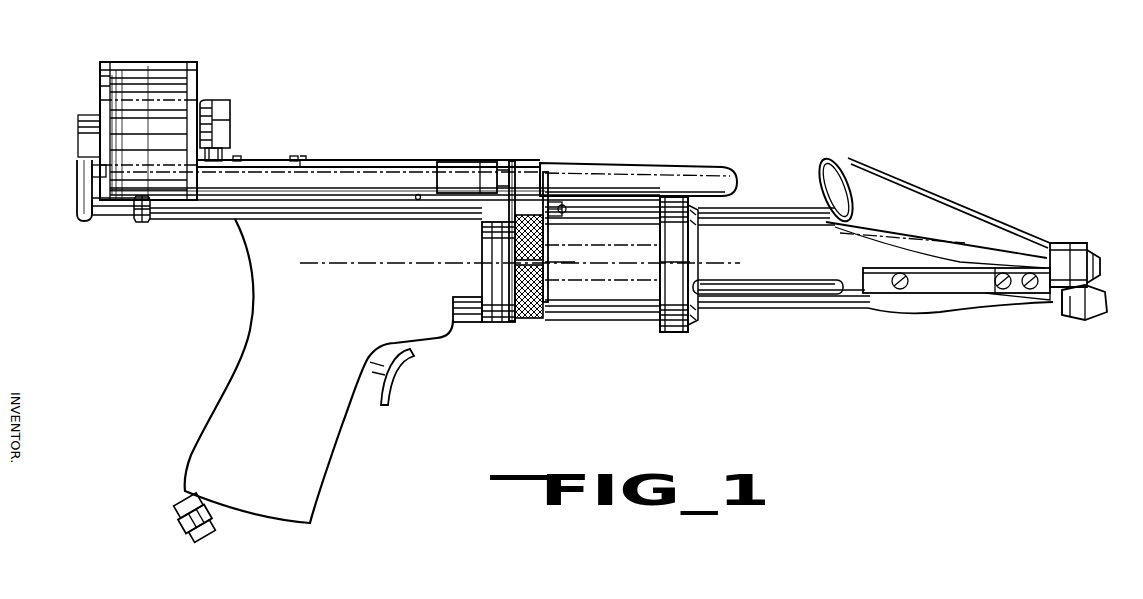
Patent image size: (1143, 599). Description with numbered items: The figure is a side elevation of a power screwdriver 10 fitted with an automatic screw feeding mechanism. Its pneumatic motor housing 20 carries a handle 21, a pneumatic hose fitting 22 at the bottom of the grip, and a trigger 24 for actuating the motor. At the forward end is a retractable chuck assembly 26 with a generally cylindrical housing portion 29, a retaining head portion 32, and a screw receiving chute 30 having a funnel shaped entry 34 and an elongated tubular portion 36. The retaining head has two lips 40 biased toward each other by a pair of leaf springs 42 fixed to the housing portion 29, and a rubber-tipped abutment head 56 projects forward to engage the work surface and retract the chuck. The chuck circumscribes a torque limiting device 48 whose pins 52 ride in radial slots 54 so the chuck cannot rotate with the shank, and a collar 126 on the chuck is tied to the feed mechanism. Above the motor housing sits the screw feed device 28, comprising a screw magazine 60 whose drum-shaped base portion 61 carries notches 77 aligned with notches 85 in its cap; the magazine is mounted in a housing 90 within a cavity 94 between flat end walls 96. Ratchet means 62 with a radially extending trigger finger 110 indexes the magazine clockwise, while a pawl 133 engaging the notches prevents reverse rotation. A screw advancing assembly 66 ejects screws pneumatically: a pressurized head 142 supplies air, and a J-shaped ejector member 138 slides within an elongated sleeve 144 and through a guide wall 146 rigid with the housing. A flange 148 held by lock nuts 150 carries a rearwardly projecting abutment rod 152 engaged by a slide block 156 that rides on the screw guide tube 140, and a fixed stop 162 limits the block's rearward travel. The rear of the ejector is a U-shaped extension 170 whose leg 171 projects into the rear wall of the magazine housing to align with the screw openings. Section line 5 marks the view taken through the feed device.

The section line 5- 5 is at (85, 170).
The dispensing gun 10 is at (617, 251).
The pneumatic motor housing 20 is at (262, 303).
The handle 21 is at (237, 378).
The pneumatic hose fitting 22 is at (178, 508).
The trigger 24 is at (393, 384).
The retractable chuck assembly 26 is at (1090, 214).
The screw feed device 28 is at (366, 160).
The cylindrical housing portion 29 is at (820, 318).
The screw receiving chute 30 is at (896, 192).
The retaining head portion 32 is at (1074, 240).
The funnel shaped entry 34 is at (838, 160).
The elongated tubular portion 36 is at (936, 205).
The lips 40 is at (1092, 260).
The leaf springs 42 is at (921, 293).
The torque limiting device 48 is at (612, 305).
The pins 52 is at (702, 288).
The radial slots 54 is at (745, 292).
The rubber-tipped abutment head 56 is at (1100, 320).
The screw magazine 60 is at (166, 60).
The base portion 61 is at (152, 62).
The ratchet means 62 is at (232, 112).
The screw advancing assembly 66 is at (122, 224).
The notches 77 is at (121, 100).
The notches 85 is at (110, 102).
The housing 90 is at (214, 150).
The cavity 94 is at (196, 68).
The end walls 96 is at (108, 72).
The trigger finger 110 is at (224, 161).
The collar 126 is at (668, 334).
The pawl 133 is at (86, 184).
The ejector member 138 is at (160, 219).
The screw guide tube 140 is at (645, 164).
The pressurized head 142 is at (300, 162).
The sleeve 144 is at (290, 220).
The guide wall 146 is at (512, 160).
The flange 148 is at (556, 172).
The lock nuts 150 is at (566, 213).
The abutment rod 152 is at (526, 172).
The slide block 156 is at (455, 165).
The fixed stop 162 is at (416, 201).
The U-shaped extension 170 is at (78, 206).
The leg 171 is at (110, 168).